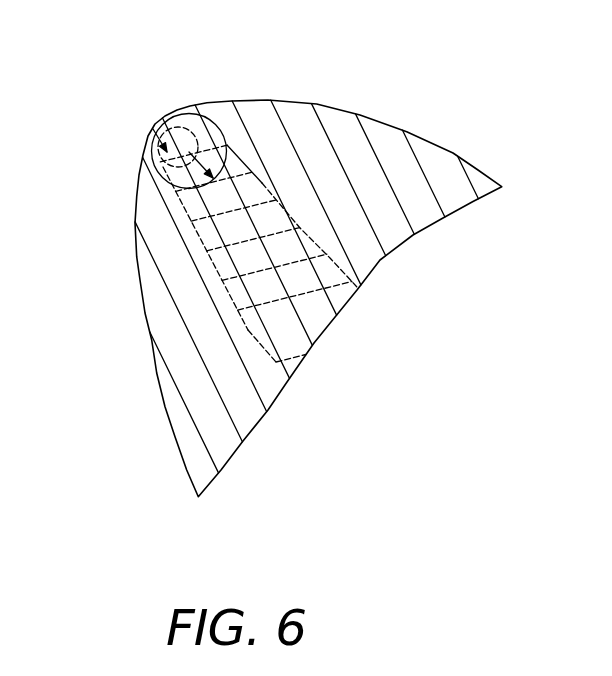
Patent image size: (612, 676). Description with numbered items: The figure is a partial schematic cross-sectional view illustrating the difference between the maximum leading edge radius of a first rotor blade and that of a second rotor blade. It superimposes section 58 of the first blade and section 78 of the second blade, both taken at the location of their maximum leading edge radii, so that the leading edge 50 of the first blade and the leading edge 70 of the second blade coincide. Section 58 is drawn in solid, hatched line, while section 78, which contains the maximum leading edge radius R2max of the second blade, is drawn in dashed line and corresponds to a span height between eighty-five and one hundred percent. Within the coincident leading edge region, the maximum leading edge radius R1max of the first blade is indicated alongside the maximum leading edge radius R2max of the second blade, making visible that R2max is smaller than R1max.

The section 58 is at (387, 121).
The cross section 78 is at (248, 330).
The leading edge 50 is at (178, 106).
The leading edge 70 is at (172, 140).
The maximum leading edge radius R1max is at (189, 152).
The maximum leading edge radius R2max is at (153, 129).